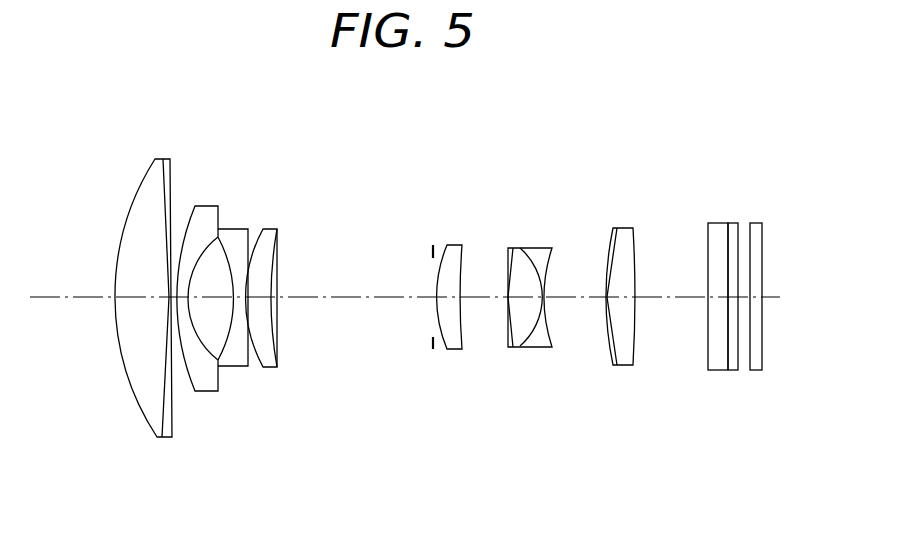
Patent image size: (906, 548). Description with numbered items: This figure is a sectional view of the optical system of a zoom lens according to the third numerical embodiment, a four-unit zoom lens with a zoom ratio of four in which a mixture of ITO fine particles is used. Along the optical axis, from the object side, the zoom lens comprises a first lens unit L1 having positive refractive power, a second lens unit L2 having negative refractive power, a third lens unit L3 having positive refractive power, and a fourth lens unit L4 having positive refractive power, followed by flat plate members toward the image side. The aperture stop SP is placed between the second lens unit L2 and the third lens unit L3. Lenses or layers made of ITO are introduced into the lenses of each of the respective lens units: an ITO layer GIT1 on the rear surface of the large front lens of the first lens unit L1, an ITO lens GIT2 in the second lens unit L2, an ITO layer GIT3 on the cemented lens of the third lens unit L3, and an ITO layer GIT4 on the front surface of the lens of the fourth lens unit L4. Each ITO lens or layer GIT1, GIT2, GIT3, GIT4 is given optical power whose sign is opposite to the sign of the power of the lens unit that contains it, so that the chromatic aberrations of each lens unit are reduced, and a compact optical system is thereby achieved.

The ITO lens (layer) GIT1 is at (168, 158).
The ITO lens (layer) GIT2 is at (278, 233).
The ITO lens (layer) GIT3 is at (512, 247).
The ITO lens (layer) GIT4 is at (614, 229).
The aperture stop SP is at (431, 240).
The first lens unit L1 is at (165, 298).
The second lens unit L2 is at (249, 318).
The third lens unit L3 is at (489, 325).
The fourth lens unit L4 is at (618, 325).